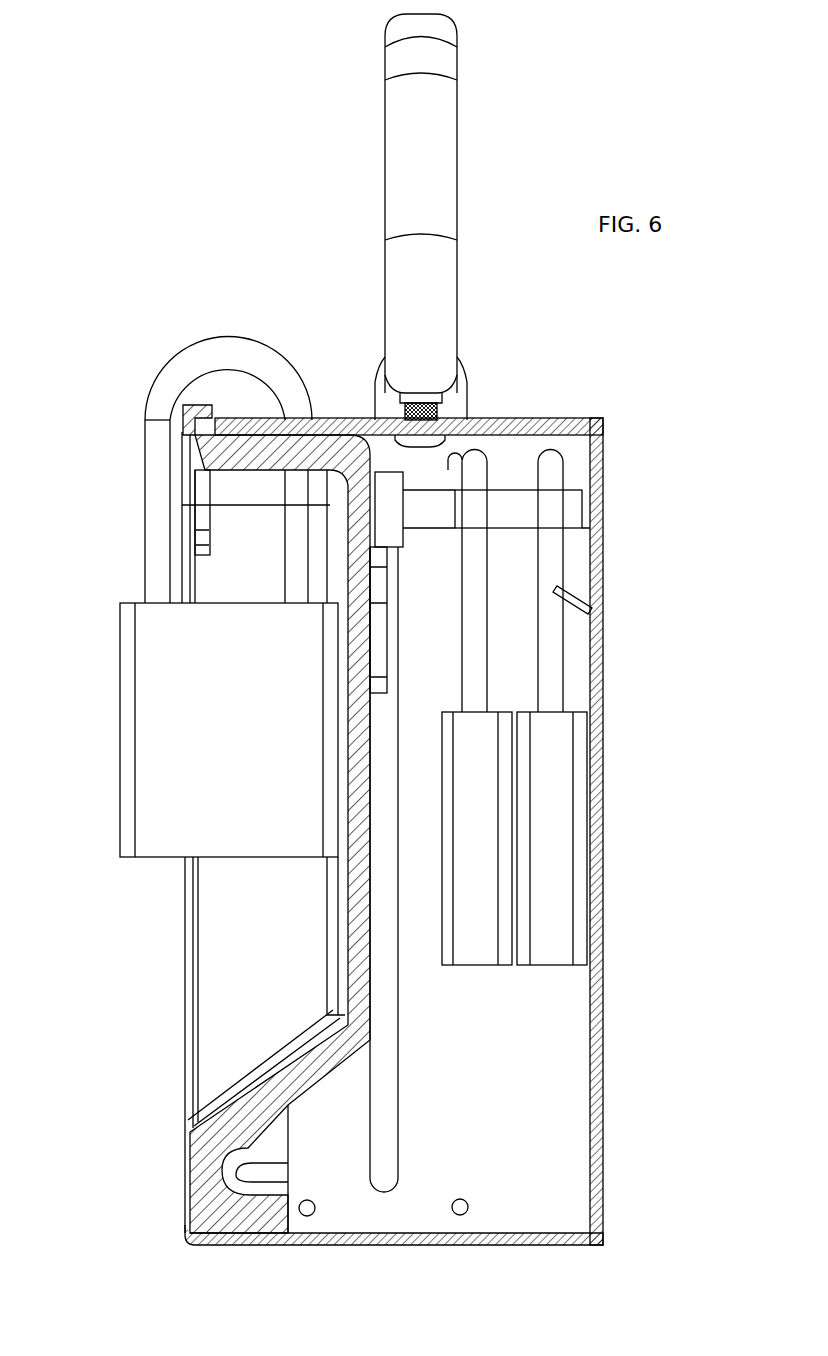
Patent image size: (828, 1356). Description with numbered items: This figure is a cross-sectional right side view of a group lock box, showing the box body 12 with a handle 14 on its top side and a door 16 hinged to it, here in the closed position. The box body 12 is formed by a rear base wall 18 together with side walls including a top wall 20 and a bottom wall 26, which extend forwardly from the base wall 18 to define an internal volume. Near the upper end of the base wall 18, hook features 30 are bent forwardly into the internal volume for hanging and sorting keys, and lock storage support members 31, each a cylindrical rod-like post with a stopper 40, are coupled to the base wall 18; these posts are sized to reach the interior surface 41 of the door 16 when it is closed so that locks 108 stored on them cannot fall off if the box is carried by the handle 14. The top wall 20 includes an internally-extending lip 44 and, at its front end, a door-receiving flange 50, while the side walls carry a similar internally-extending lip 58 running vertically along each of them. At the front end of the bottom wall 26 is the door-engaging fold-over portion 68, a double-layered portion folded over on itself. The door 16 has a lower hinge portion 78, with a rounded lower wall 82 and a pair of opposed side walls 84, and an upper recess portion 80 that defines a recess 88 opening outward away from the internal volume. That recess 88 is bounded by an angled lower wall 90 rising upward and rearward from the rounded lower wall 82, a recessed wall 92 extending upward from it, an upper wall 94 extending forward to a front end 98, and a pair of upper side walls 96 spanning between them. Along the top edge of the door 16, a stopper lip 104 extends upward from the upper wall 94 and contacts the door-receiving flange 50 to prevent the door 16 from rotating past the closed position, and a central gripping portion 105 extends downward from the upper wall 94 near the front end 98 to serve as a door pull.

The box body 12 is at (423, 807).
The handle 14 is at (435, 160).
The door 16 is at (258, 1090).
The base wall 18 is at (600, 950).
The top wall 20 is at (480, 418).
The bottom wall 26 is at (537, 1245).
The hook features 30 is at (583, 590).
The lock storage support members 31 is at (580, 508).
The stopper 40 is at (410, 537).
The interior surface 41 is at (368, 990).
The internally-extending lip 44 is at (378, 418).
The door-receiving flange 50 is at (205, 410).
The internally-extending lip 58 is at (396, 1135).
The door-engaging fold-over portion 68 is at (183, 1238).
The lower hinge portion 78 is at (183, 1210).
The upper recess portion 80 is at (183, 940).
The rounded lower wall 82 is at (190, 1150).
The opposed side walls 84 is at (280, 1170).
The recess 88 is at (222, 998).
The angled lower wall 90 is at (185, 1125).
The recessed wall 92 is at (368, 1042).
The upper wall 94 is at (215, 505).
The upper side walls 96 is at (212, 973).
The front end 98 is at (190, 465).
The stopper lip 104 is at (190, 413).
The central gripping portion 105 is at (205, 530).
The locks 108 is at (155, 830).